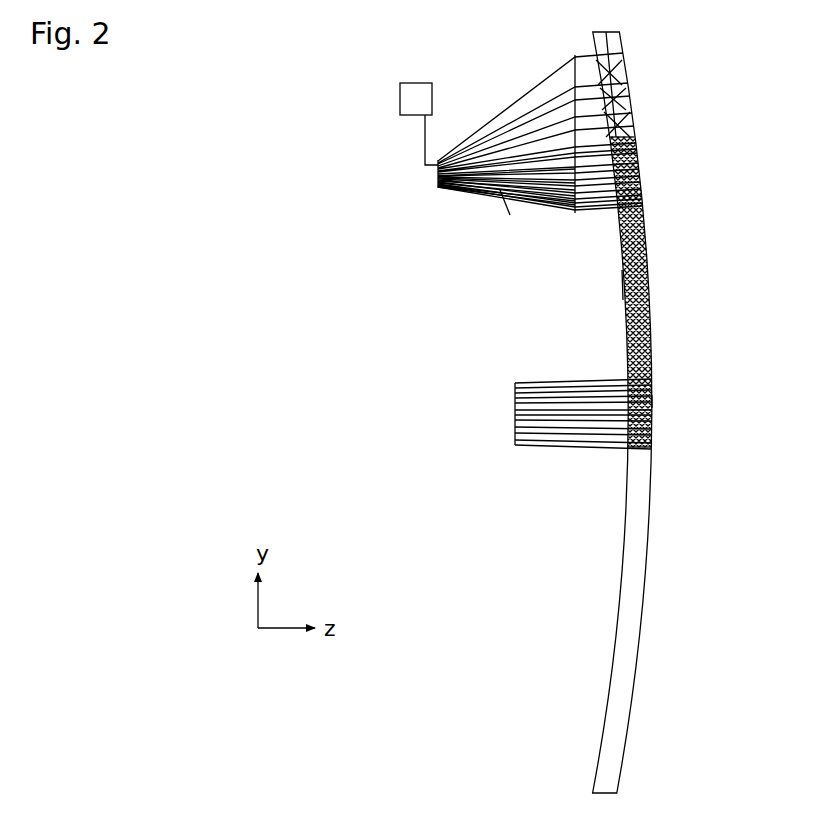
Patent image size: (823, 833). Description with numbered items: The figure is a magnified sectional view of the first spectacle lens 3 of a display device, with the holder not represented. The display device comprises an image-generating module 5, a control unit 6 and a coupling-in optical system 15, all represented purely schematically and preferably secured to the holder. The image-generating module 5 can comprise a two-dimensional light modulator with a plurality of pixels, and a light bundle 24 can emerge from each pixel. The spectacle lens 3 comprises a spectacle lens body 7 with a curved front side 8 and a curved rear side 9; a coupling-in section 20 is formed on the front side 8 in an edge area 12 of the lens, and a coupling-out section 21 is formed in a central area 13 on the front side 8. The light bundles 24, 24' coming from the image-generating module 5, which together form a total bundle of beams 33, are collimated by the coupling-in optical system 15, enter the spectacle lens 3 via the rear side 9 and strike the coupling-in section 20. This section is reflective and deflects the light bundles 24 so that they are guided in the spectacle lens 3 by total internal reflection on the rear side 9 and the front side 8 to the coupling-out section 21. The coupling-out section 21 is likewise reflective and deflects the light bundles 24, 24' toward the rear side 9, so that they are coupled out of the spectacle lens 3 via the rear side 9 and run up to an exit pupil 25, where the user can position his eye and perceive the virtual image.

The first spectacle lens 3 is at (613, 647).
The image-generating module 5 is at (437, 183).
The control unit 6 is at (400, 100).
The spectacle lens body 7 is at (630, 568).
The front side 8 is at (647, 235).
The rear side 9 is at (623, 283).
The edge area 12 is at (632, 88).
The central area 13 is at (655, 400).
The coupling-in optical system 15 is at (573, 52).
The coupling-in section 20 is at (638, 156).
The coupling-out section 21 is at (652, 447).
The light bundle 24 is at (540, 131).
The light bundle 24' is at (506, 222).
The exit pupil 25 is at (515, 435).
The total bundle of beams 33 is at (513, 205).